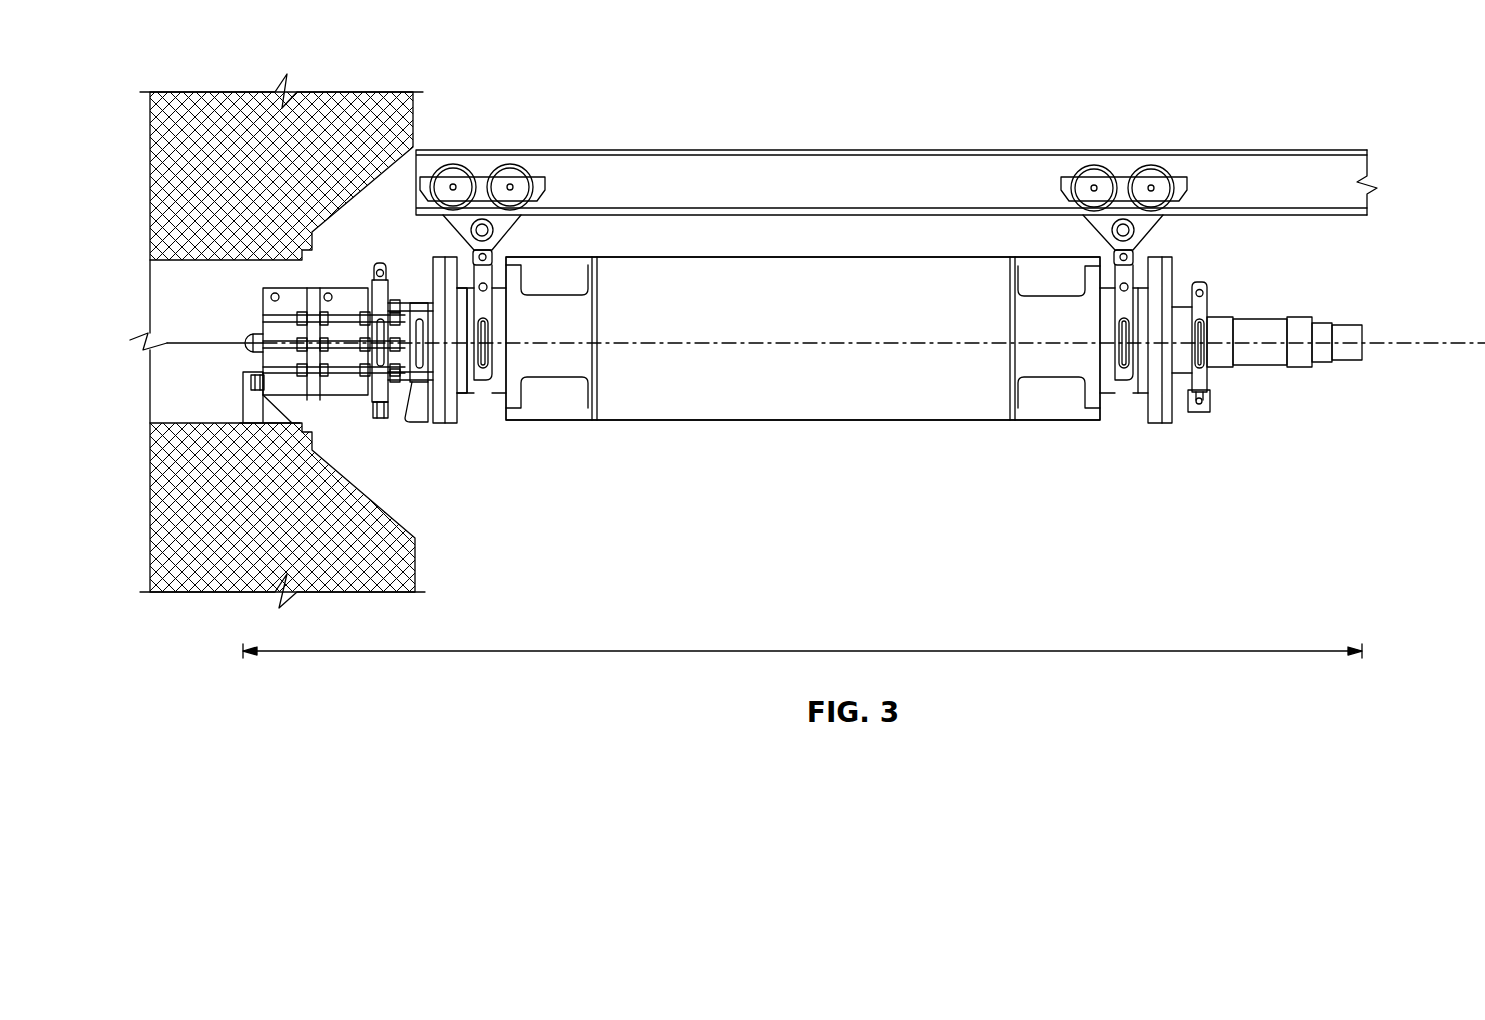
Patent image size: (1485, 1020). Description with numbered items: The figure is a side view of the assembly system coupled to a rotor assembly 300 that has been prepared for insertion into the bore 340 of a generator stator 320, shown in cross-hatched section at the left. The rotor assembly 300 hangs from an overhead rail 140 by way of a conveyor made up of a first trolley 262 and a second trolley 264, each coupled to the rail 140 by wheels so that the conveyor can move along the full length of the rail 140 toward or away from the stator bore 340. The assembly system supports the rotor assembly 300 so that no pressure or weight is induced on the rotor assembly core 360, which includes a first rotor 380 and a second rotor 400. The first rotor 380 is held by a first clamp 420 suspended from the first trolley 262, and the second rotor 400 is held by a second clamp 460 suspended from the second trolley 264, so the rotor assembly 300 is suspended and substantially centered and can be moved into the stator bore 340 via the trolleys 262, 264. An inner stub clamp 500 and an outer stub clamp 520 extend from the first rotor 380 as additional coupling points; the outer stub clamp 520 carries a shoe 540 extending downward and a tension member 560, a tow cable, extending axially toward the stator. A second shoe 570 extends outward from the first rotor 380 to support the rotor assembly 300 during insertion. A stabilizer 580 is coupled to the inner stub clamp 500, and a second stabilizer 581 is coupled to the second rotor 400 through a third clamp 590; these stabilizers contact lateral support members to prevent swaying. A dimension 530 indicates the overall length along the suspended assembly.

The rail 140 is at (1272, 160).
The first trolley 262 is at (483, 163).
The second trolley 264 is at (1135, 162).
The rotor assembly 300 is at (1044, 436).
The generator stator 320 is at (338, 101).
The stator bore 340 is at (288, 270).
The rotor assembly core 360 is at (670, 407).
The first rotor 380 is at (450, 420).
The second rotor 400 is at (1260, 352).
The first clamp 420 is at (478, 383).
The second clamp 460 is at (1125, 378).
The inner stub clamp 500 is at (352, 383).
The outer stub clamp 520 is at (288, 293).
The overall length 530 is at (802, 650).
The shoe 540 is at (252, 410).
The tension member 560 is at (172, 342).
The second shoe 570 is at (425, 420).
The stabilizer 580 is at (1200, 412).
The second stabilizer 581 is at (382, 419).
The third clamp 590 is at (1200, 312).